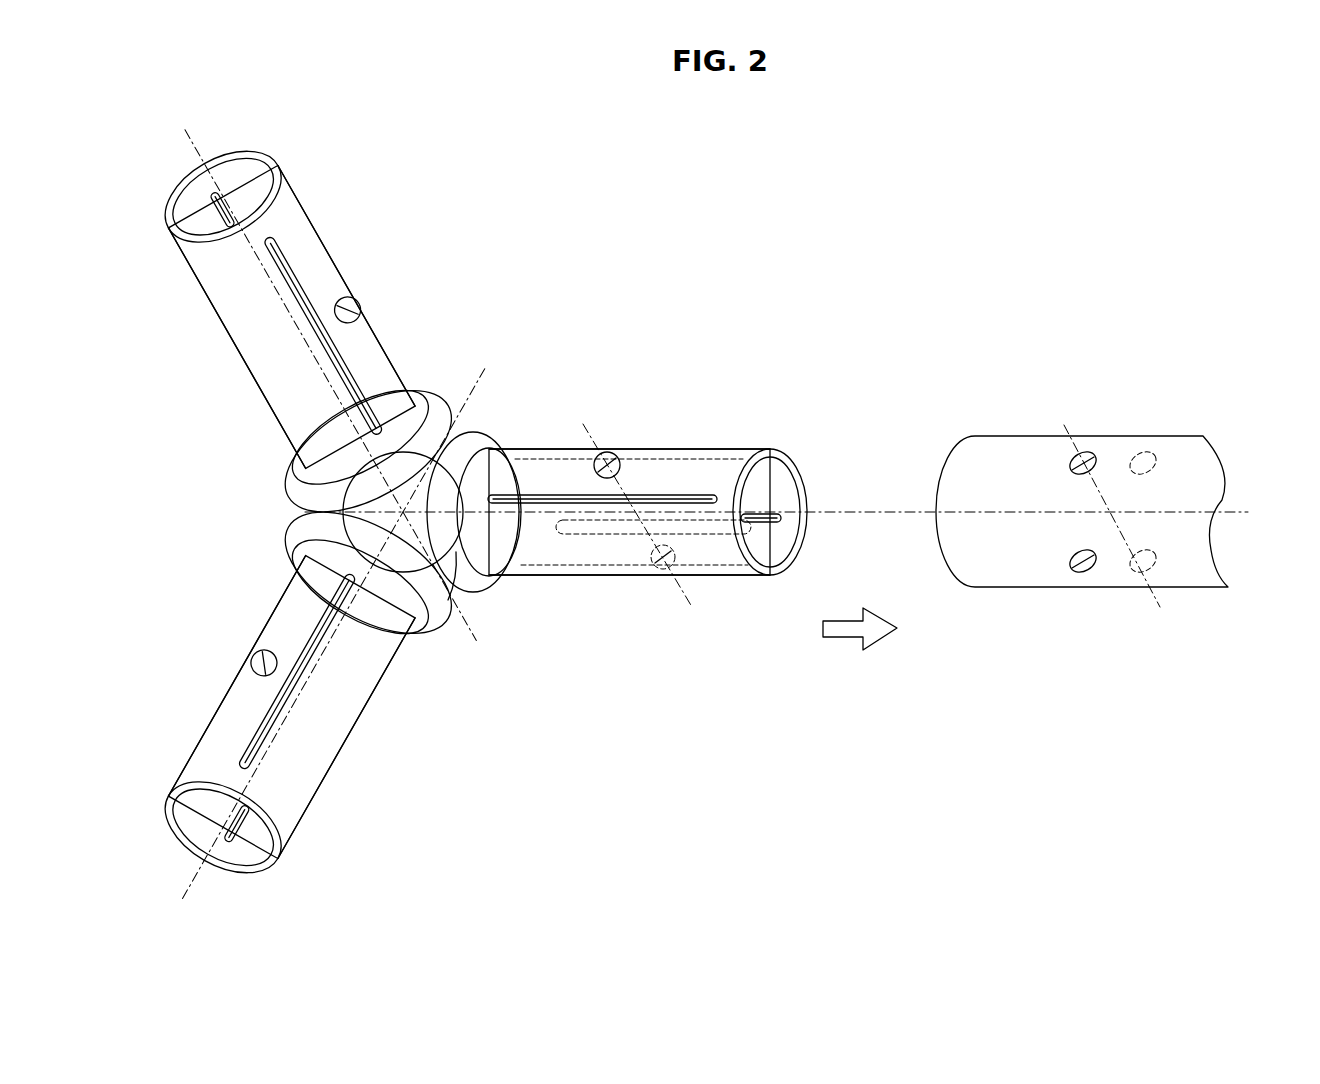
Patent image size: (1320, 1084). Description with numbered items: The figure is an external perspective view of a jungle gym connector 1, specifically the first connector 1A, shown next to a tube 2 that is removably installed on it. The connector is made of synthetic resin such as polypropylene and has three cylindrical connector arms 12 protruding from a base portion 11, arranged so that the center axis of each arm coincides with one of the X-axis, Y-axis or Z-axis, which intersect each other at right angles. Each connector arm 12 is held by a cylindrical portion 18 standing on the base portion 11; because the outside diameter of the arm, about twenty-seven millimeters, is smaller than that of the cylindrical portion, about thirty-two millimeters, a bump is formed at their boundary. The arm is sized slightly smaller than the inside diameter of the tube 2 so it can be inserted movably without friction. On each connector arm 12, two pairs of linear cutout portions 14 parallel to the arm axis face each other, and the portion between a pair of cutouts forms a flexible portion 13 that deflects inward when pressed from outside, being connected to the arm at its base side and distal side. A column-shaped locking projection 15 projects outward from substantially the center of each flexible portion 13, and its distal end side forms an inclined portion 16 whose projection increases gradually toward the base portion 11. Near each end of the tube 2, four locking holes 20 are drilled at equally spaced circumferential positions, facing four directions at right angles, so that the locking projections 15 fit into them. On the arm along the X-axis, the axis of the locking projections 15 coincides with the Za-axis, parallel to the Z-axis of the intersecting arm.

The jungle gym connector 1 is at (700, 517).
The first connector 1A is at (497, 300).
The tube 2 is at (1018, 435).
The base portion 11 is at (308, 504).
The connector arm 12 is at (288, 373).
The flexible portion 13 is at (657, 478).
The cutout portion 14 is at (512, 497).
The locking projection 15 is at (602, 452).
The inclined portion 16 is at (620, 448).
The cylindrical portion 18 is at (464, 552).
The locking hole 20 is at (1079, 451).